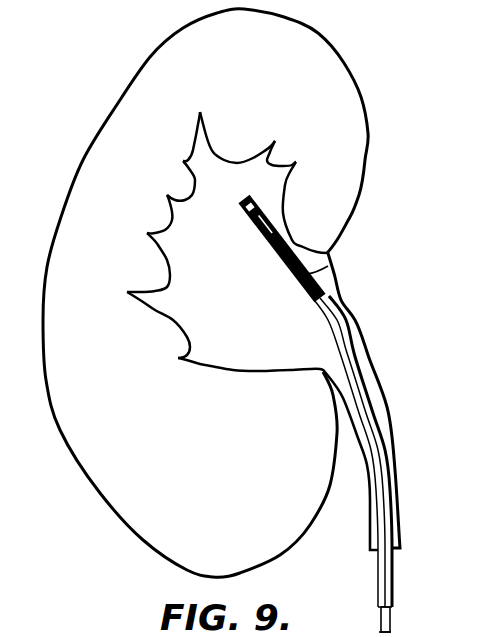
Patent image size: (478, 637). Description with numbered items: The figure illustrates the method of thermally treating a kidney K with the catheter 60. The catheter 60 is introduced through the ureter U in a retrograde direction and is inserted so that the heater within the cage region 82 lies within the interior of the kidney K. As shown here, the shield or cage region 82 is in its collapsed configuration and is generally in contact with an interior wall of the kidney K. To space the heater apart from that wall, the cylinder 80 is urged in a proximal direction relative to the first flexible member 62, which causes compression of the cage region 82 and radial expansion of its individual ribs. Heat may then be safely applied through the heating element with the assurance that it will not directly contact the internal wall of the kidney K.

The kidney K is at (124, 105).
The ureter U is at (391, 428).
The cylinder 80 is at (393, 568).
The catheter 60 is at (352, 362).
The cage region 82 is at (328, 266).
The first flexible member 62 is at (391, 617).